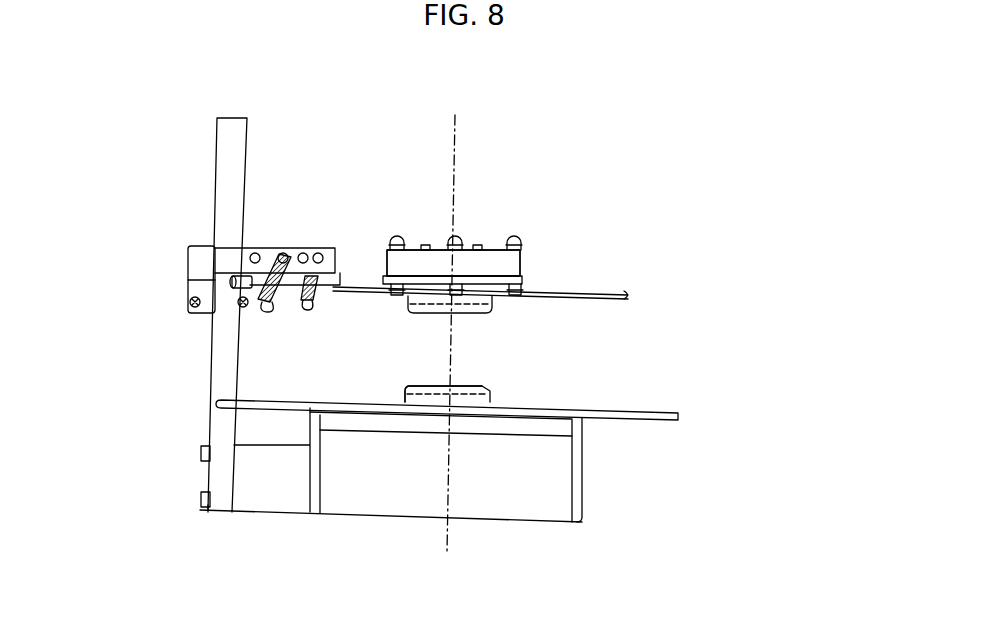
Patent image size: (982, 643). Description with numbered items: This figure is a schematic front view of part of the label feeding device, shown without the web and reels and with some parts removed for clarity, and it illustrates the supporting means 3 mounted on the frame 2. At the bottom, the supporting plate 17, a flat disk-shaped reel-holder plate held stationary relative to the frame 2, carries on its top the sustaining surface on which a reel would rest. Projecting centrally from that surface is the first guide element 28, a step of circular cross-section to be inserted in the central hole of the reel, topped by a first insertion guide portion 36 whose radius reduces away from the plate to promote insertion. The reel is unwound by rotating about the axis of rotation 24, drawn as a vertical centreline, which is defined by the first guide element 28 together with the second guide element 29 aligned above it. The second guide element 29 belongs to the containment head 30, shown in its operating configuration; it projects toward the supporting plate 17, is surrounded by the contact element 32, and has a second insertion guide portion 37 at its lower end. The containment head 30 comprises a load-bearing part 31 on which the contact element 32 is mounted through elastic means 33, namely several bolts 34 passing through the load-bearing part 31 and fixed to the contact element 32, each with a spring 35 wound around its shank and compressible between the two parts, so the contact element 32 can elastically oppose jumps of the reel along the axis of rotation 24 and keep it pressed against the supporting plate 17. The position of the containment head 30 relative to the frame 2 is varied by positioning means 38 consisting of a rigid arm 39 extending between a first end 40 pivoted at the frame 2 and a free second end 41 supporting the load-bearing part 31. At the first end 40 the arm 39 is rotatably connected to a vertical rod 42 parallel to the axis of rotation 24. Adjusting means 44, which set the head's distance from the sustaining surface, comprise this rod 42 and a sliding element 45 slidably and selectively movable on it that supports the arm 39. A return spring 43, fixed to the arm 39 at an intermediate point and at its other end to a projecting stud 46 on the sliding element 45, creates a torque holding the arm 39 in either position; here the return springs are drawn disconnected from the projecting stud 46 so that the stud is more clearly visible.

The frame 2 is at (520, 493).
The supporting means 3 is at (665, 277).
The supporting plate 17 is at (627, 417).
The axis of rotation 24 is at (447, 540).
The first guide element 28 is at (482, 402).
The second guide element 29 is at (483, 298).
The containment head 30 is at (557, 262).
The load-bearing part 31 is at (390, 283).
The contact element 32 is at (527, 287).
The elastic means 33 is at (563, 288).
The bolts 34 is at (385, 227).
The spring 35 is at (386, 278).
The first insertion guide portion 36 is at (400, 386).
The second insertion guide portion 37 is at (495, 308).
The positioning means 38 is at (200, 222).
The arm 39 is at (302, 256).
The first end 40 is at (255, 247).
The second end 41 is at (327, 247).
The rod 42 is at (225, 357).
The return spring 43 is at (272, 268).
The adjusting means 44 is at (200, 233).
The sliding element 45 is at (193, 292).
The projecting stud 46 is at (230, 282).